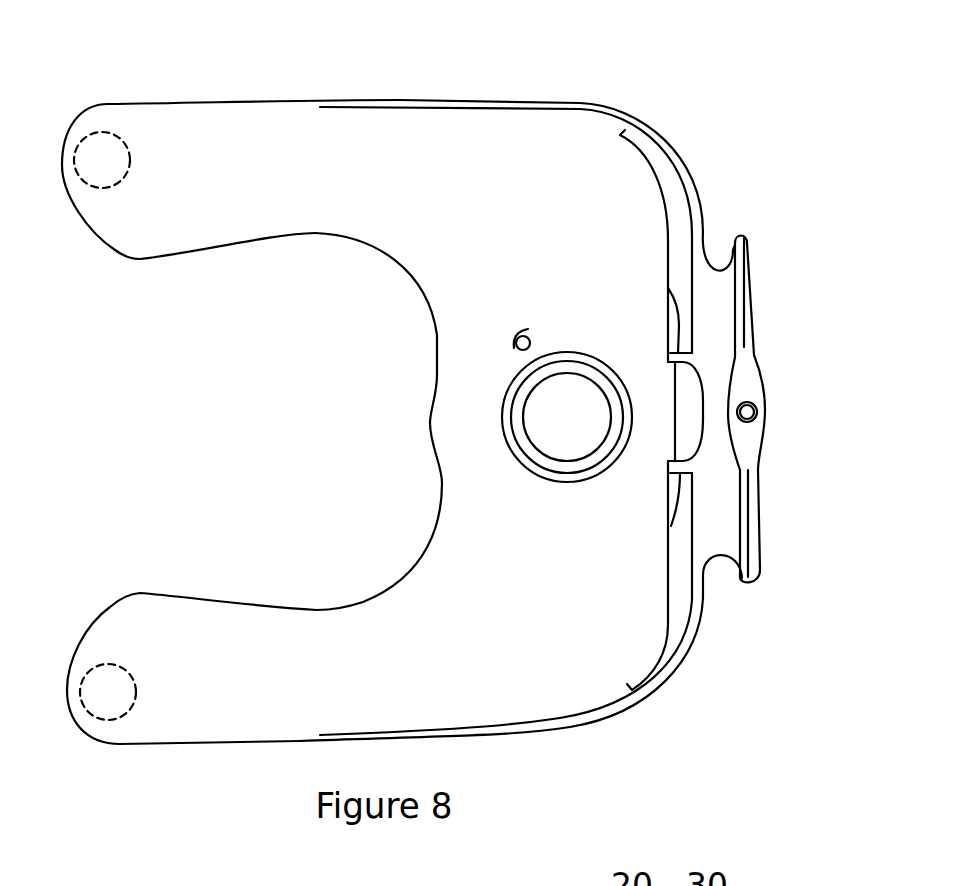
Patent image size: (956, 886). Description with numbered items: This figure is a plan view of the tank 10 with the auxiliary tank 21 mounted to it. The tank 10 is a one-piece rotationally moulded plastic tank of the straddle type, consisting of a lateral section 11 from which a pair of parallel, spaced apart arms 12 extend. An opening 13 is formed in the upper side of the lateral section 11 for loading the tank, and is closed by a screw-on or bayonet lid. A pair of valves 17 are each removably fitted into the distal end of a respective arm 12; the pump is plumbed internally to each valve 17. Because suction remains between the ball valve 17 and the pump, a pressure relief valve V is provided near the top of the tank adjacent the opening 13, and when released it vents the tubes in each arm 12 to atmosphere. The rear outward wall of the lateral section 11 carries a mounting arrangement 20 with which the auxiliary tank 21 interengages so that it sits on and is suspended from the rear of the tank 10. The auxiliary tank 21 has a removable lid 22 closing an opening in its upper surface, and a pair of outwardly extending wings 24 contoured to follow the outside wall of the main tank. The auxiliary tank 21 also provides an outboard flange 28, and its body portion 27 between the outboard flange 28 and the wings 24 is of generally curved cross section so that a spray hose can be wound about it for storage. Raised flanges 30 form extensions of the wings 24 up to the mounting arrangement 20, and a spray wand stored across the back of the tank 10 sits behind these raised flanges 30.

The tank 10 is at (596, 93).
The lateral section 11 is at (450, 437).
The arms 12 is at (257, 217).
The opening 13 is at (585, 398).
The valves 17 is at (121, 123).
The mounting arrangement 20 is at (692, 393).
The auxiliary tank 21 is at (773, 481).
The removable lid 22 is at (757, 411).
The wings 24 is at (660, 162).
The body portion 27 is at (713, 288).
The outboard flange 28 is at (740, 292).
The raised flanges 30 is at (678, 298).
The pressure relief valve V is at (516, 343).